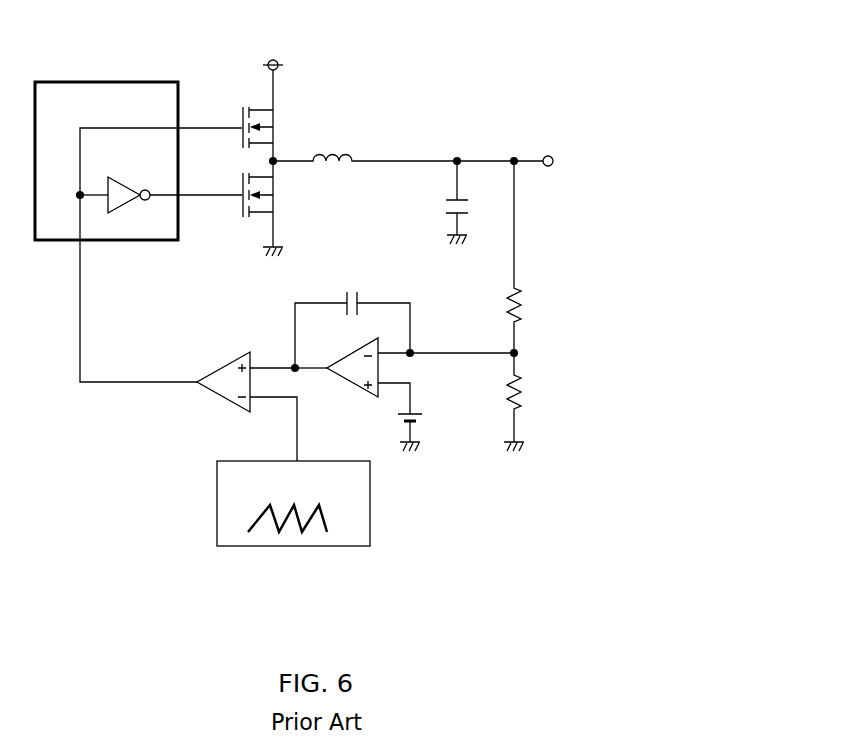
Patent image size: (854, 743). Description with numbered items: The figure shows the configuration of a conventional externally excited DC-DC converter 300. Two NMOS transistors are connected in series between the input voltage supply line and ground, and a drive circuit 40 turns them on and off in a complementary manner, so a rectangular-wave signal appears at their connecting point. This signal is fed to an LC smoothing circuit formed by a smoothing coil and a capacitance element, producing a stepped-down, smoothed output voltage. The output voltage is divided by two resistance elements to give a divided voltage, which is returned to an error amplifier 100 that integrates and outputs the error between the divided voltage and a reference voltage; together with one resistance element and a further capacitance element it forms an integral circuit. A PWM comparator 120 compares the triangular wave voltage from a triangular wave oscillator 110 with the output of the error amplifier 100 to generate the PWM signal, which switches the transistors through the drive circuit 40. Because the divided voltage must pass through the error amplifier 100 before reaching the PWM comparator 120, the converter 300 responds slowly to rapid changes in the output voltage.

The externally excited DC-DC converter 300 is at (478, 78).
The drive circuit 40 is at (108, 82).
The error amplifier 100 is at (352, 353).
The triangular wave oscillator 110 is at (370, 512).
The PWM comparator 120 is at (222, 368).